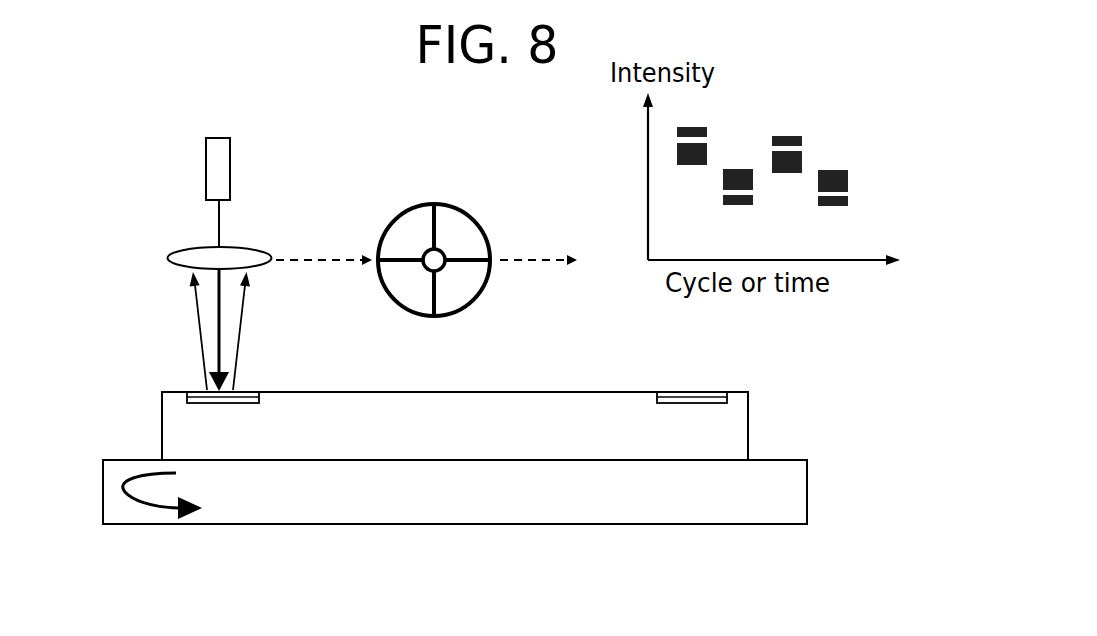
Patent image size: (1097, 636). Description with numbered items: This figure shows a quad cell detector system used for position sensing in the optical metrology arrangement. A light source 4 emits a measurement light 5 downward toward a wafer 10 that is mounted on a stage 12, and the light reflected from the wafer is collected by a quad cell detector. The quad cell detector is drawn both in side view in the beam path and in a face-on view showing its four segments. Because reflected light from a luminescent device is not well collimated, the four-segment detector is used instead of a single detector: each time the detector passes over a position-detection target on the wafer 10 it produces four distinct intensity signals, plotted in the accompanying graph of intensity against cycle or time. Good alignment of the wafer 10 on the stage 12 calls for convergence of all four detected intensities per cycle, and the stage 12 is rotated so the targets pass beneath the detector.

The light source 4 is at (218, 157).
The measurement light 5 is at (218, 225).
The wafer 10 is at (538, 408).
The stage 12 is at (342, 507).